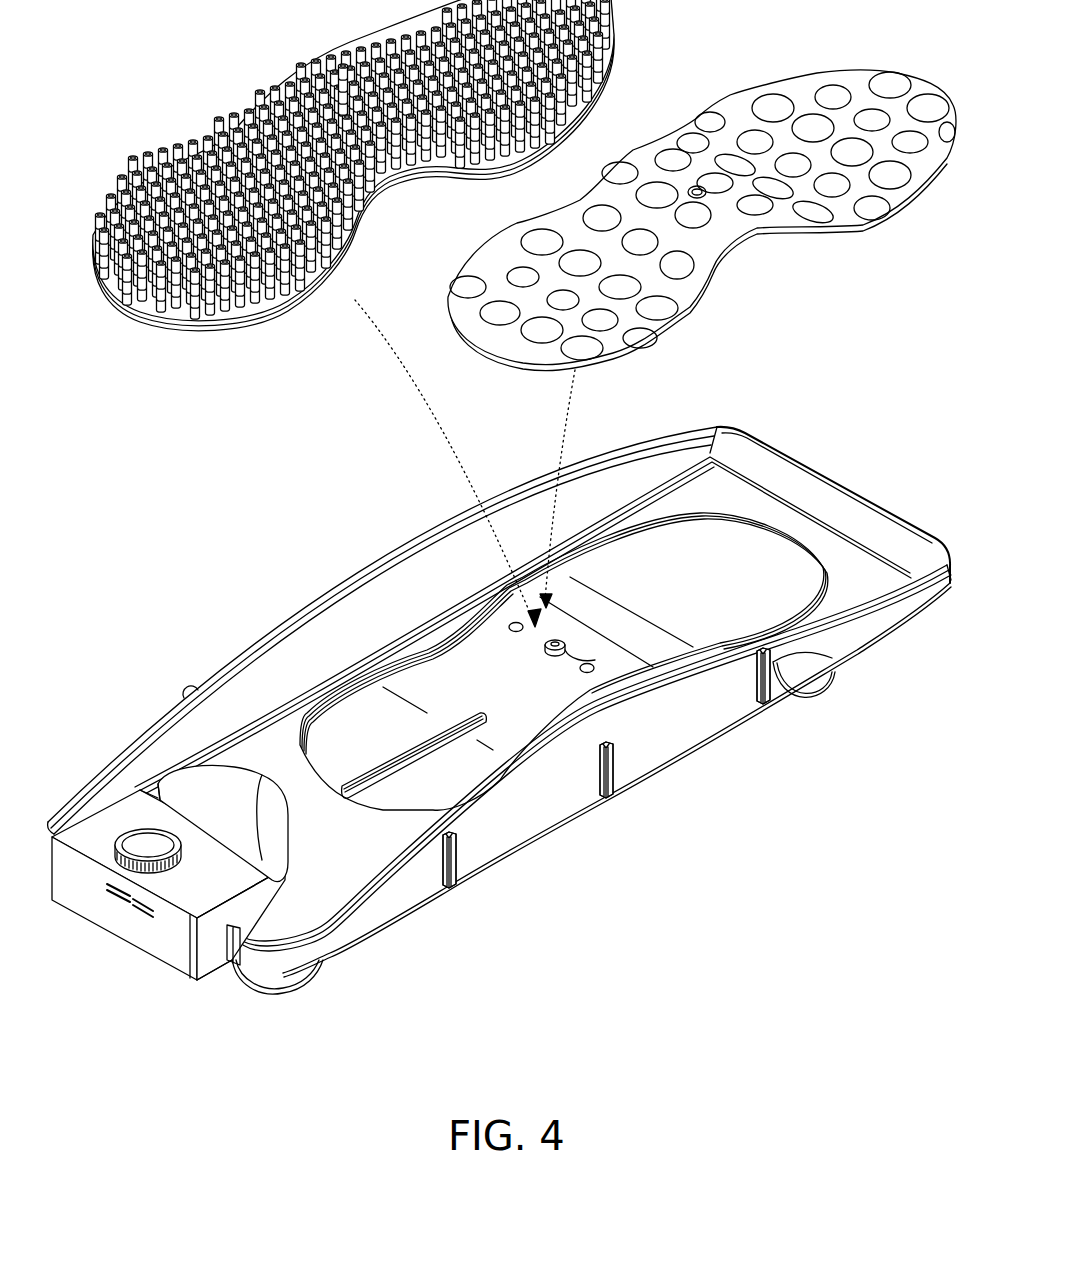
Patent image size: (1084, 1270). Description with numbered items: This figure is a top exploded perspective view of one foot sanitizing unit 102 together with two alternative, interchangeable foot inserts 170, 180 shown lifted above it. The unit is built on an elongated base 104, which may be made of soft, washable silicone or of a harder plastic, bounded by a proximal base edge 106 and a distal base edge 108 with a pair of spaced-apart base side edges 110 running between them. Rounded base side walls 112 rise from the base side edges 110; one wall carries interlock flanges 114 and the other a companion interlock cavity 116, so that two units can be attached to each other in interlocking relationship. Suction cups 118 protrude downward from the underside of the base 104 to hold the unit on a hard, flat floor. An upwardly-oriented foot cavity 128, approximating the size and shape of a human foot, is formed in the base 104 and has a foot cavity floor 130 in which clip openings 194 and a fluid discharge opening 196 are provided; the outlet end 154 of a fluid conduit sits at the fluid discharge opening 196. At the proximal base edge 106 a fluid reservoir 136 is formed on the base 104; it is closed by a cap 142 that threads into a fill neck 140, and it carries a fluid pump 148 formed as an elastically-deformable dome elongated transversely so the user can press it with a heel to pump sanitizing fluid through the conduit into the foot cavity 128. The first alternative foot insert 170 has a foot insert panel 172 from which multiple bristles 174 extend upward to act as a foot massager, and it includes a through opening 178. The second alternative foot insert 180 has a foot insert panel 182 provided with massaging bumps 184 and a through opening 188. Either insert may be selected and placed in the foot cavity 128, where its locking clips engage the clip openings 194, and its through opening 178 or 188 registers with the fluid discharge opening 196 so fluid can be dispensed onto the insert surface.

The foot sanitizing unit 102 is at (495, 722).
The base 104 is at (392, 922).
The proximal base edge 106 is at (225, 957).
The distal base edge 108 is at (843, 476).
The base side edges 110 is at (297, 680).
The base side walls 112 is at (440, 551).
The interlock flange 114 is at (463, 858).
The interlock cavity 116 is at (188, 692).
The suction cup 118 is at (278, 987).
The foot cavity 128 is at (581, 601).
The foot cavity floor 130 is at (773, 565).
The fluid reservoir 136 is at (166, 870).
The fill neck 140 is at (176, 880).
The cap 142 is at (136, 830).
The fluid pump 148 is at (232, 790).
The outlet end 154 is at (557, 638).
The foot insert 170 is at (353, 183).
The foot insert panel 172 is at (287, 312).
The bristles 174 is at (380, 43).
The through opening 178 is at (343, 67).
The foot insert 180 is at (702, 191).
The foot insert panel 182 is at (843, 215).
The massaging bumps 184 is at (887, 80).
The through opening 188 is at (697, 185).
The clip opening 194 is at (509, 627).
The fluid discharge opening 196 is at (595, 655).